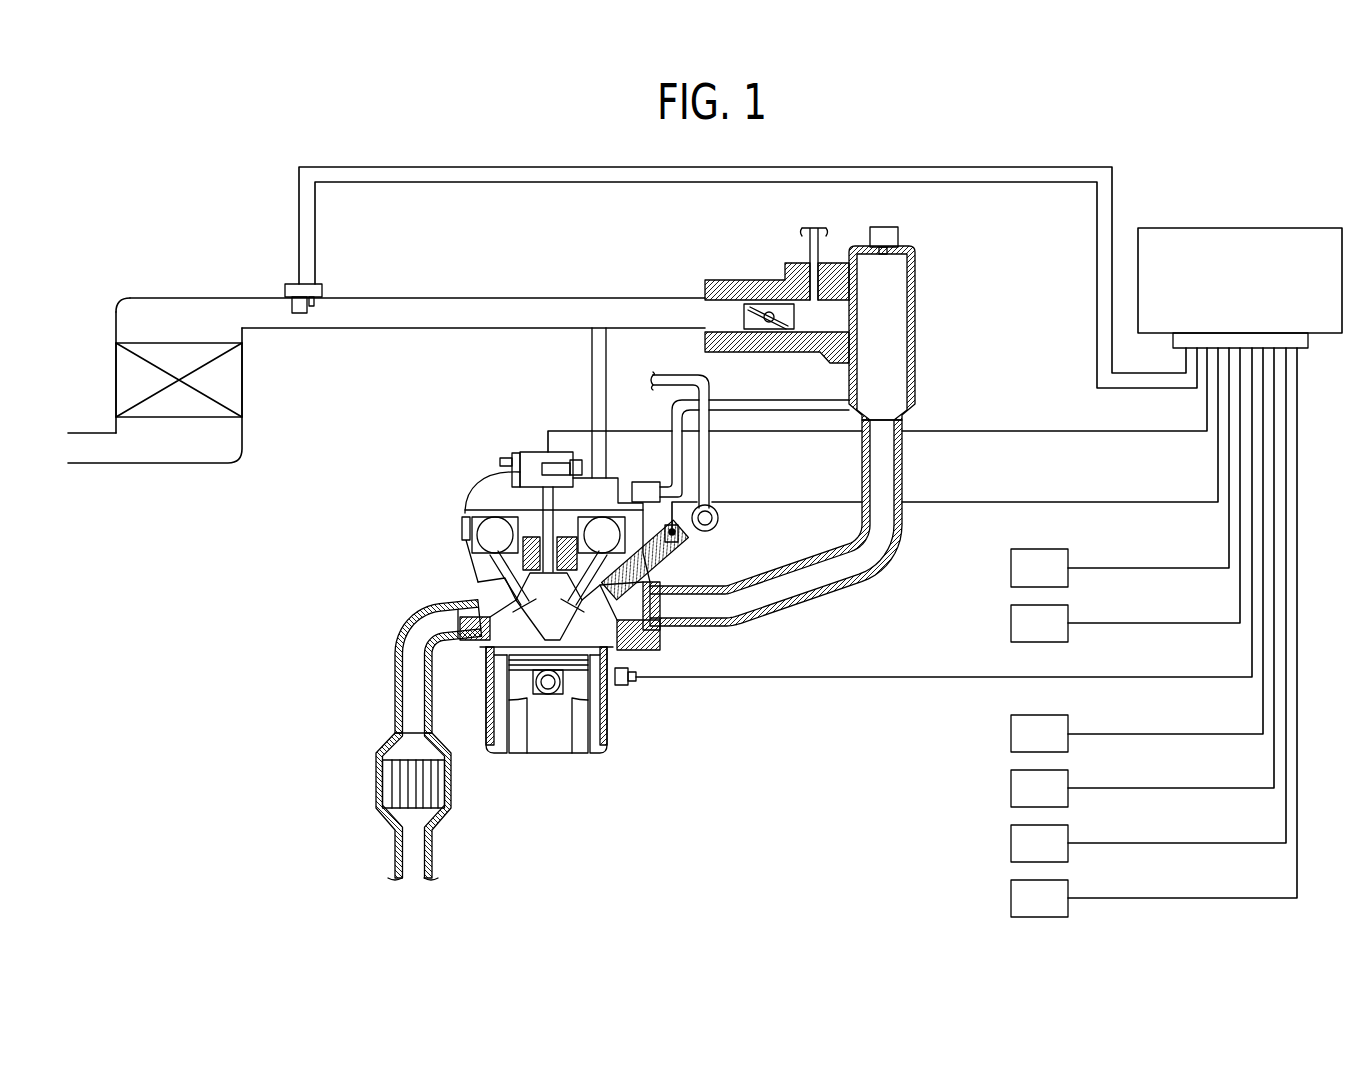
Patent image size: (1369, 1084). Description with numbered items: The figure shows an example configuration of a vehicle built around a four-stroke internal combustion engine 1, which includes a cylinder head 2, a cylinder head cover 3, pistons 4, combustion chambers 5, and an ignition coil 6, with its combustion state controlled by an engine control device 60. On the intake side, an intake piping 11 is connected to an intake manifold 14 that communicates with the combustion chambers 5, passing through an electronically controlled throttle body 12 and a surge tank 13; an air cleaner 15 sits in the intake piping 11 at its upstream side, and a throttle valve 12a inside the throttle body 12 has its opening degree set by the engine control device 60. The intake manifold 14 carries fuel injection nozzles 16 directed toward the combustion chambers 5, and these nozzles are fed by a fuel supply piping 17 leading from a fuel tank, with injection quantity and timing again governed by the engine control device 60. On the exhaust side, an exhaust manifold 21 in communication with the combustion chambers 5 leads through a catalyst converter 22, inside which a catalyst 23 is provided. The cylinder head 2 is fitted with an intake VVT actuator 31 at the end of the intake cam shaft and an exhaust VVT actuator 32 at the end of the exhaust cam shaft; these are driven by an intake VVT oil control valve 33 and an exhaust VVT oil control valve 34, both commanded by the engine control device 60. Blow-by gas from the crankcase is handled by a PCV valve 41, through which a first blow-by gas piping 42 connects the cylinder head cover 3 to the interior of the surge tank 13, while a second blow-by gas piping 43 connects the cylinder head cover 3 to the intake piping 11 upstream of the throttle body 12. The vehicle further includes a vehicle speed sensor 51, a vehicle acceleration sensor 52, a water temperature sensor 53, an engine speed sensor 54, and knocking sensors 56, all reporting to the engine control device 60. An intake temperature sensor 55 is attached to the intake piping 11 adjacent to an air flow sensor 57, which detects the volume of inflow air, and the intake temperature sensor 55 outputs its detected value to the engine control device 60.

The internal combustion engine 1 is at (437, 549).
The cylinder head 2 is at (462, 590).
The cylinder head cover 3 is at (491, 487).
The pistons 4 is at (526, 690).
The combustion chambers 5 is at (556, 655).
The ignition coil 6 is at (535, 470).
The intake piping 11 is at (493, 298).
The electronically controlled throttle body 12 is at (752, 280).
The throttle valve 12a is at (775, 332).
The surge tank 13 is at (916, 312).
The intake manifold 14 is at (885, 563).
The air cleaner 15 is at (133, 376).
The fuel injection nozzles 16 is at (690, 558).
The fuel supply piping 17 is at (710, 466).
The exhaust manifold 21 is at (405, 633).
The catalyst converter 22 is at (386, 740).
The catalyst 23 is at (403, 783).
The intake VVT actuator 31 is at (600, 528).
The exhaust VVT actuator 32 is at (496, 527).
The intake VVT oil control valve 33 is at (1011, 564).
The exhaust VVT oil control valve 34 is at (1011, 619).
The PCV valve 41 is at (645, 483).
The first blow-by gas piping 42 is at (762, 400).
The second blow-by gas piping 43 is at (592, 372).
The vehicle speed sensor 51 is at (1011, 730).
The vehicle acceleration sensor 52 is at (1011, 784).
The water temperature sensor 53 is at (1011, 839).
The engine speed sensor 54 is at (1011, 894).
The intake temperature sensor 55 is at (322, 300).
The knocking sensors 56 is at (622, 686).
The air flow sensor 57 is at (298, 313).
The engine control device 60 is at (1233, 228).